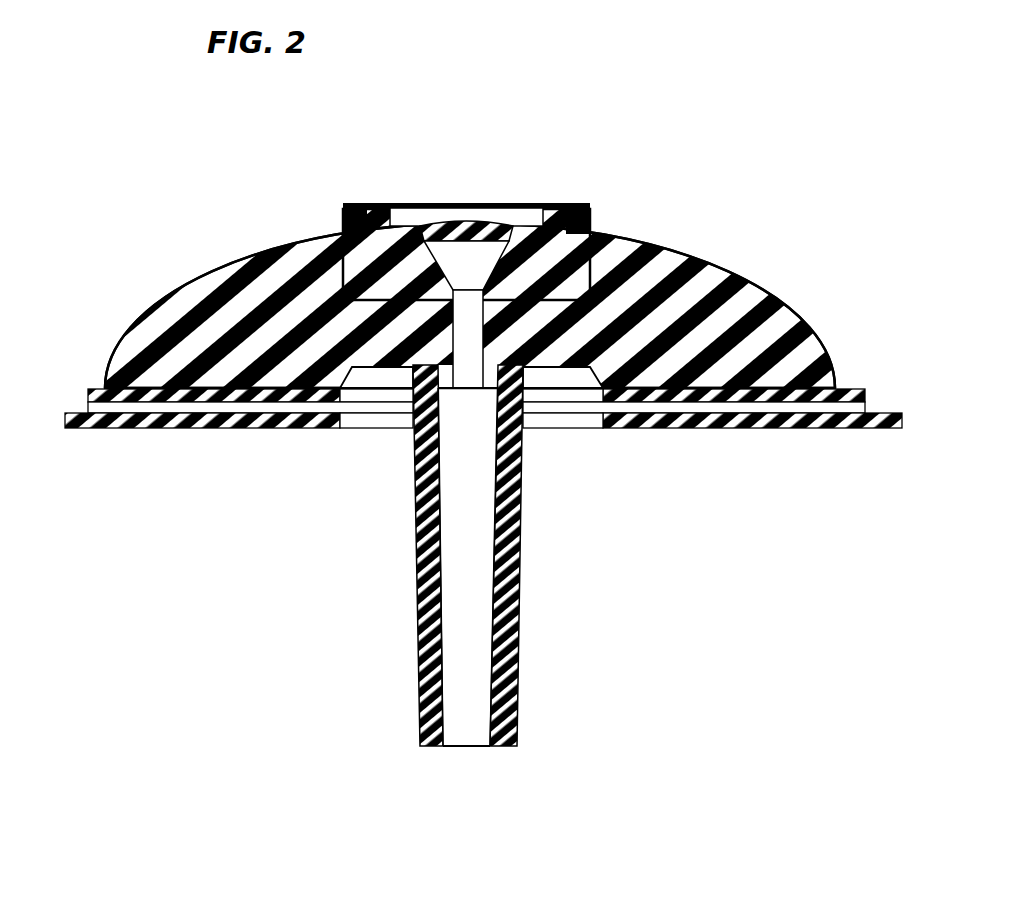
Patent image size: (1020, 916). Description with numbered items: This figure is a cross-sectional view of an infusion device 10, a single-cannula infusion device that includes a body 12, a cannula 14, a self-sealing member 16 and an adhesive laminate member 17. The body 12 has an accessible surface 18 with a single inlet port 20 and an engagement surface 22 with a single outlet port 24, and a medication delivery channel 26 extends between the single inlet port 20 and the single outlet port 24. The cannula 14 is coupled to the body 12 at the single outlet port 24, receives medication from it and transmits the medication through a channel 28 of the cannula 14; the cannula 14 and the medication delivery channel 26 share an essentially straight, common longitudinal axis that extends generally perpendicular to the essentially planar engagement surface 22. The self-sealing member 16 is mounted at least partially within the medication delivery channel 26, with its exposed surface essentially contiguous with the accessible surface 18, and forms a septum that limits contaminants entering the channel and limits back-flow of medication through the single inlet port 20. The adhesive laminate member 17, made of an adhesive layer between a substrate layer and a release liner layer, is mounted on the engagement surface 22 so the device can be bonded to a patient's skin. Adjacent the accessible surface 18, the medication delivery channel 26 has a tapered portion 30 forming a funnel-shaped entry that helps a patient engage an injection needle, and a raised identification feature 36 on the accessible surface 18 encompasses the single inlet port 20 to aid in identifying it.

The infusion device 10 is at (248, 183).
The body 12 is at (727, 257).
The cannula 14 is at (513, 590).
The self-sealing member 16 is at (503, 237).
The adhesive laminate member 17 is at (60, 388).
The accessible surface 18 is at (223, 268).
The single inlet port 20 is at (441, 204).
The engagement surface 22 is at (164, 398).
The single outlet port 24 is at (458, 402).
The medication delivery channel 26 is at (475, 282).
The channel 28 is at (451, 750).
The tapered portion 30 is at (466, 298).
The identification feature 36 is at (362, 204).